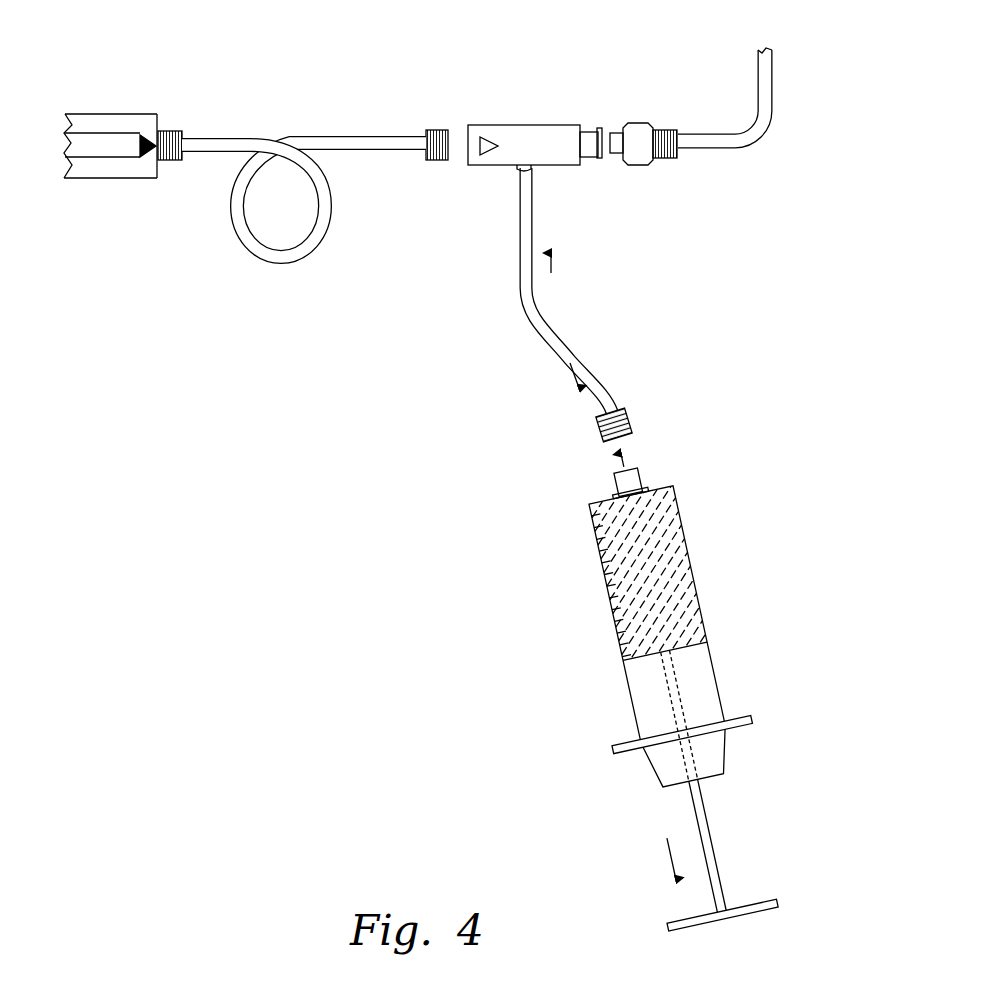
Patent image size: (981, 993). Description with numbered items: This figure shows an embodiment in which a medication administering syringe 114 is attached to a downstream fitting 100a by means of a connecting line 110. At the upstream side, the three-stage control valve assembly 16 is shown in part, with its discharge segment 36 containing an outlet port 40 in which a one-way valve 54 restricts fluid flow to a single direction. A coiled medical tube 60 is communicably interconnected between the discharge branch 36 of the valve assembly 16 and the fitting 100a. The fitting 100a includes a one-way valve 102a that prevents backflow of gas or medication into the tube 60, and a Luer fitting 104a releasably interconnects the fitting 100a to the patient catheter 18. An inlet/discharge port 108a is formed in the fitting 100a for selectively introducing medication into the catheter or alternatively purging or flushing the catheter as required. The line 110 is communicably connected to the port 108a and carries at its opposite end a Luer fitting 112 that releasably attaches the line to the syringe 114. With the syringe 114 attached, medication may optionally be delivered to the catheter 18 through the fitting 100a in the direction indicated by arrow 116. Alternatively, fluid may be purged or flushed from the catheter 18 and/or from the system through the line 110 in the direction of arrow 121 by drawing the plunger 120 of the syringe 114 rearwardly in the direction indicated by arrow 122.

The three-stage control valve assembly 16 is at (90, 114).
The discharge segment 36 is at (152, 112).
The outlet port 40 is at (122, 158).
The one-way valve 54 is at (141, 140).
The coiled medical tube 60 is at (433, 129).
The fitting 100a is at (516, 124).
The one-way valve 102a is at (480, 143).
The Luer fitting 104a is at (598, 128).
The catheter 18 is at (757, 78).
The inlet/discharge port 108a is at (530, 166).
The line 110 is at (543, 316).
The arrow 116 is at (552, 274).
The arrow 121 is at (568, 375).
The Luer fitting 112 is at (598, 427).
The syringe 114 is at (609, 597).
The plunger 120 is at (710, 830).
The arrow 122 is at (668, 855).